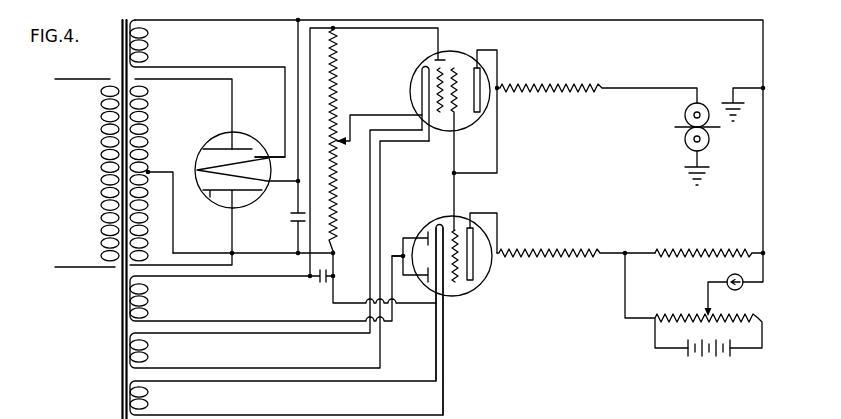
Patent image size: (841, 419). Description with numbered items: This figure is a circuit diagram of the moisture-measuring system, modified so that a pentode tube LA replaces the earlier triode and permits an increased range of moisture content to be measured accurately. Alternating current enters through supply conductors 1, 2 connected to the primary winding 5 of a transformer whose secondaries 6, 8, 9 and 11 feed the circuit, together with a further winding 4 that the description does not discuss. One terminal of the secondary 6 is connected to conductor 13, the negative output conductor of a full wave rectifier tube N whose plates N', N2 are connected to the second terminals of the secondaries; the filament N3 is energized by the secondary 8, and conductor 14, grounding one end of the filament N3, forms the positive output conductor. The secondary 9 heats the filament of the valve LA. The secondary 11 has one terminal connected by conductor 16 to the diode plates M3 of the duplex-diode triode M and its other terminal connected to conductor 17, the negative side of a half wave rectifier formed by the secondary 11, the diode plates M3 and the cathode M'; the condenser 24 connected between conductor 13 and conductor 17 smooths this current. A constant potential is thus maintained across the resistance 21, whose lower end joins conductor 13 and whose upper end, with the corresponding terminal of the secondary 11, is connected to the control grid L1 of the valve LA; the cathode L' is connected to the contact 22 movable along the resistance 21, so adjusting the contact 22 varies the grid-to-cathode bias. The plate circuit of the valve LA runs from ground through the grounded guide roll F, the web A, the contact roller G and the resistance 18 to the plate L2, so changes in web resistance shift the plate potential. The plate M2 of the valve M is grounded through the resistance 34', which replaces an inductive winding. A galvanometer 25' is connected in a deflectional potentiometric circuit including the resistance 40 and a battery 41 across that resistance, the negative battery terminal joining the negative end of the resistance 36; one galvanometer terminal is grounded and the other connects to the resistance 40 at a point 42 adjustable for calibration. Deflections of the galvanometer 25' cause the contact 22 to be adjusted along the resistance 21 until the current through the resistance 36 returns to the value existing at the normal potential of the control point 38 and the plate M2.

The supply conductor 1 is at (80, 79).
The supply conductor 2 is at (62, 267).
The heater winding 4 is at (150, 405).
The primary winding 5 is at (100, 172).
The secondary winding 6 is at (150, 117).
The transformer secondary 8 is at (150, 58).
The transformer secondary 9 is at (150, 357).
The transformer secondary 11 is at (150, 300).
The conductor 13 is at (257, 253).
The conductor 14 is at (252, 22).
The conductor 16 is at (220, 321).
The conductor 17 is at (340, 28).
The resistance 18 is at (546, 88).
The resistance 21 is at (338, 162).
The contact 22 is at (341, 137).
The condenser 24 is at (323, 281).
The galvanometer 25' is at (711, 288).
The resistance 34' is at (576, 234).
The resistance 36 is at (693, 253).
The control point 38 is at (500, 88).
The resistance 40 is at (663, 318).
The battery 41 is at (712, 352).
The point 42 is at (711, 311).
The web A is at (675, 127).
The guide roll F is at (710, 139).
The roller G is at (686, 109).
The pentode tube LA is at (473, 126).
The cathode L' is at (409, 104).
The control grid L1 is at (437, 64).
The plate L2 is at (477, 68).
The valve M is at (455, 267).
The cathode M' is at (432, 304).
The plate M2 is at (472, 258).
The diode plates M3 is at (418, 238).
The full wave rectifier tube N is at (224, 164).
The plate N' is at (244, 131).
The plate N2 is at (210, 197).
The filament N3 is at (197, 170).